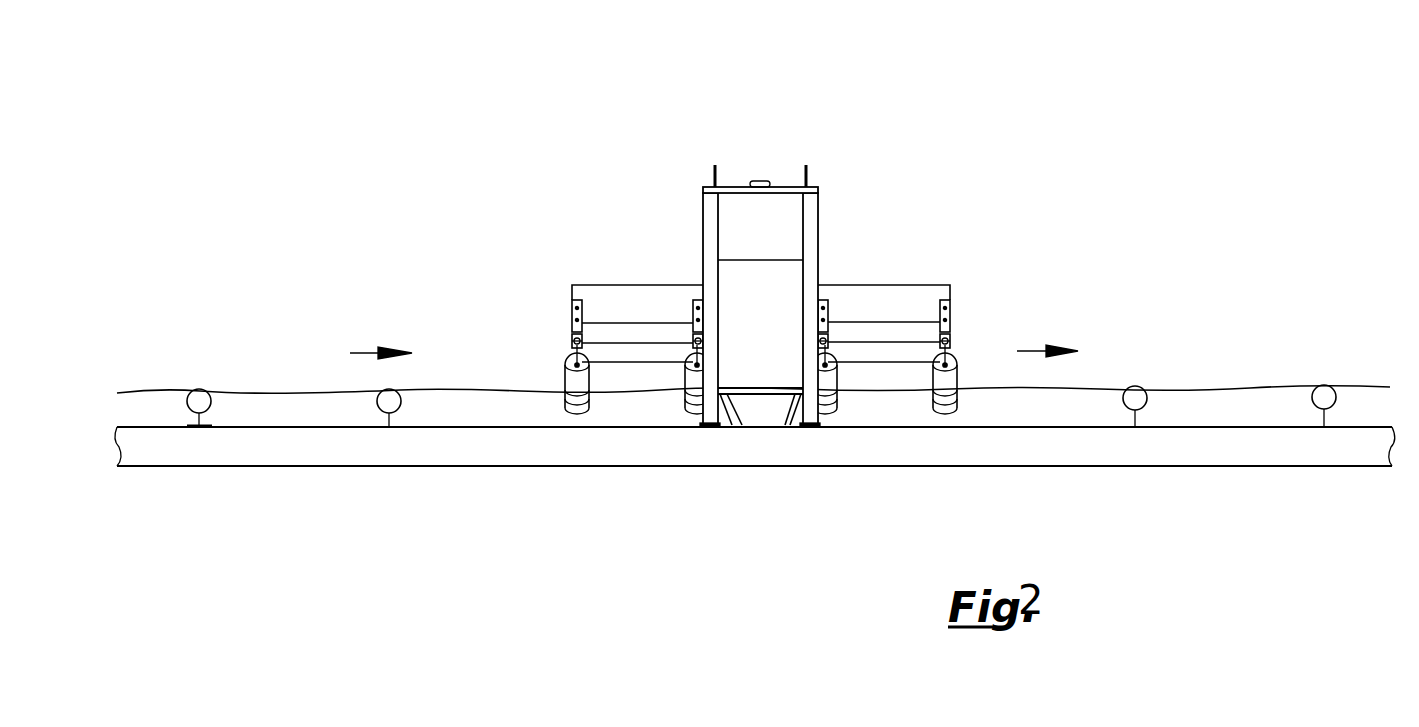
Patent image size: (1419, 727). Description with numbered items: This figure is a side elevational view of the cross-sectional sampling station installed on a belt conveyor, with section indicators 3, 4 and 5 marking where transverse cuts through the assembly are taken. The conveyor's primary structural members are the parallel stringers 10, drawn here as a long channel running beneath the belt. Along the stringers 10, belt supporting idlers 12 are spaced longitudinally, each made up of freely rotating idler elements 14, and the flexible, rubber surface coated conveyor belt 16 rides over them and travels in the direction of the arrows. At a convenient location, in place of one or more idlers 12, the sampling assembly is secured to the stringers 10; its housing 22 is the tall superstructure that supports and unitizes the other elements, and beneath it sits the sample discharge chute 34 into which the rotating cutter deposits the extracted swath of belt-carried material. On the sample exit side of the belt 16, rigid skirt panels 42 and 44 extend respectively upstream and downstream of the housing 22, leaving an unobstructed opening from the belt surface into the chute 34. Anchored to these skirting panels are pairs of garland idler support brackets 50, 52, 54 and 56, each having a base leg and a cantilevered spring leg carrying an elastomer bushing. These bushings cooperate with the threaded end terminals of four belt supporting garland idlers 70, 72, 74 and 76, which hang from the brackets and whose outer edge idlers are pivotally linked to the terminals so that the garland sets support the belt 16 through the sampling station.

The section line 3- 3 is at (307, 385).
The section line 4- 4 is at (666, 324).
The section line 5- 5 is at (764, 388).
The stringers 10 is at (511, 459).
The belt supporting idlers 12 is at (402, 402).
The idler elements 14 is at (212, 402).
The conveyor belt 16 is at (207, 391).
The housing 22 is at (828, 206).
The sample discharge chute 34 is at (775, 413).
The skirt panel 42 is at (597, 292).
The skirt panel 44 is at (918, 292).
The garland idler support bracket 50 is at (572, 312).
The garland idler support bracket 52 is at (693, 304).
The garland idler support bracket 54 is at (828, 306).
The garland idler support bracket 56 is at (951, 308).
The garland idler 70 is at (566, 378).
The garland idler 72 is at (686, 378).
The garland idler 74 is at (836, 376).
The garland idler 76 is at (956, 376).